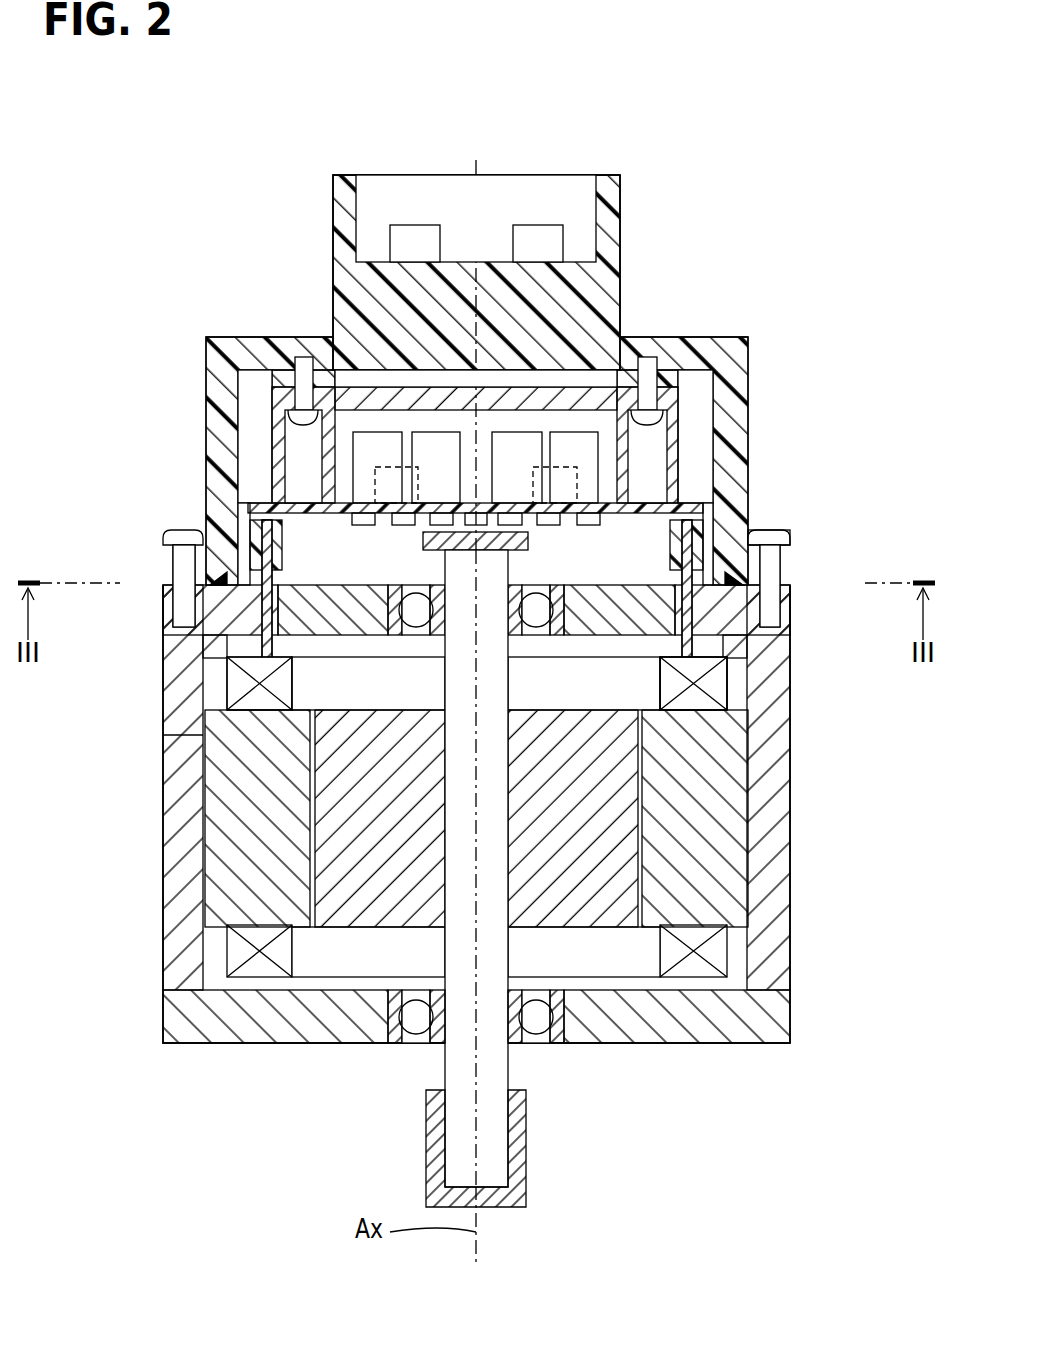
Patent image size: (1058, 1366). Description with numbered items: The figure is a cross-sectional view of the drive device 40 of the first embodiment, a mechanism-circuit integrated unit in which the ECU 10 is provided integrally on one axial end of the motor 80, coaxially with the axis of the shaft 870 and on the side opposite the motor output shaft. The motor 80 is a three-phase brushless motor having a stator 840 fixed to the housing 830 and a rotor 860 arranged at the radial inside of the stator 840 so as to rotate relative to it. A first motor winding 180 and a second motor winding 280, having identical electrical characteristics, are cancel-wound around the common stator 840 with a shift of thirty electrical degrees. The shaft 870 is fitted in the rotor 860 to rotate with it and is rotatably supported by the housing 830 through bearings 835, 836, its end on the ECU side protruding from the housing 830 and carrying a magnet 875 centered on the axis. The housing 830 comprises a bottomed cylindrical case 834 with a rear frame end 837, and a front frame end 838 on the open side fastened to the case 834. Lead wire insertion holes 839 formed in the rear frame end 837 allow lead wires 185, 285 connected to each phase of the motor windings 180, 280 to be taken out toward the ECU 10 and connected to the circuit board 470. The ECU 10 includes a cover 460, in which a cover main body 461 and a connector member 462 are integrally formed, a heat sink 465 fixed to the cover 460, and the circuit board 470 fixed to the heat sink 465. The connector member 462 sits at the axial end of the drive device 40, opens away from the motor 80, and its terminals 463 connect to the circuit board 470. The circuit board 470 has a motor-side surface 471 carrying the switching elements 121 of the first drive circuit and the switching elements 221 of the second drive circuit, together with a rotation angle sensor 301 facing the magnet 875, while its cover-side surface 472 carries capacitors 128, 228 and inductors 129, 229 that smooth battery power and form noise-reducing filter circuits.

The ECU 10 is at (190, 340).
The drive device 40 is at (198, 172).
The connector member 462 is at (333, 188).
The terminals 463 is at (412, 224).
The cover 460 is at (752, 360).
The cover main body 461 is at (238, 380).
The heat sink 465 is at (668, 385).
The circuit board 470 is at (672, 490).
The capacitor 128 is at (355, 455).
The inductor 129 is at (375, 490).
The capacitor 228 is at (605, 460).
The inductor 229 is at (580, 490).
The cover-side surface 472 is at (660, 508).
The switching elements 121 is at (310, 513).
The magnet 875 is at (258, 530).
The rotation angle sensor 301 is at (215, 575).
The motor-side surface 471 is at (752, 538).
The switching elements 221 is at (540, 548).
The housing 830 is at (872, 915).
The bearing 835 is at (700, 620).
The case 834 is at (765, 930).
The front frame end 838 is at (768, 1013).
The rear frame end 837 is at (320, 605).
The lead wire insertion holes 839 is at (555, 605).
The lead wire 185 is at (275, 660).
The motor 80 is at (148, 960).
The first motor winding 180 is at (237, 688).
The second motor winding 280 is at (382, 699).
The lead wire 285 is at (700, 660).
The stator 840 is at (235, 865).
The rotor 860 is at (598, 790).
The shaft 870 is at (498, 858).
The bearing 836 is at (540, 1022).